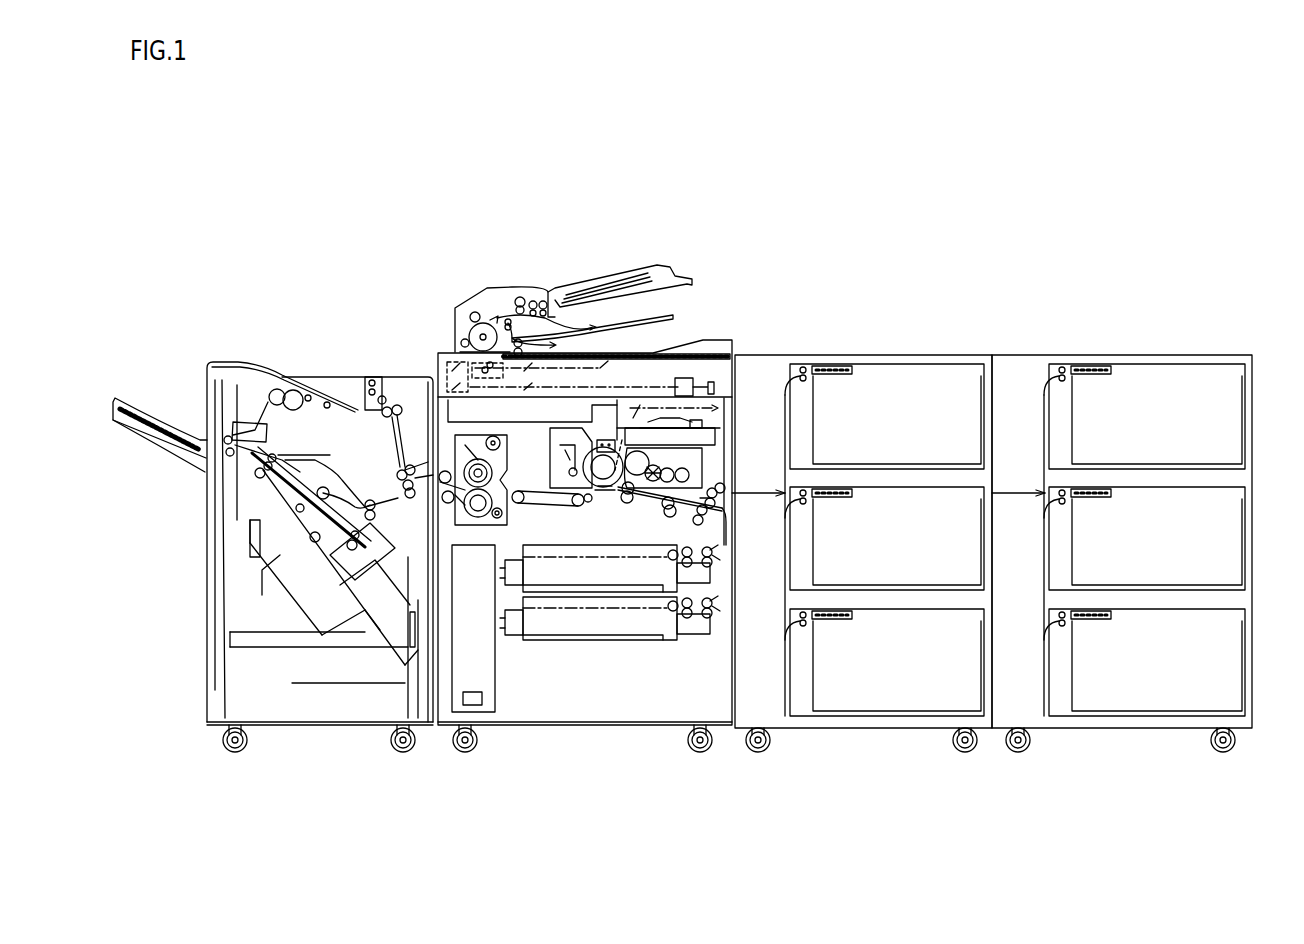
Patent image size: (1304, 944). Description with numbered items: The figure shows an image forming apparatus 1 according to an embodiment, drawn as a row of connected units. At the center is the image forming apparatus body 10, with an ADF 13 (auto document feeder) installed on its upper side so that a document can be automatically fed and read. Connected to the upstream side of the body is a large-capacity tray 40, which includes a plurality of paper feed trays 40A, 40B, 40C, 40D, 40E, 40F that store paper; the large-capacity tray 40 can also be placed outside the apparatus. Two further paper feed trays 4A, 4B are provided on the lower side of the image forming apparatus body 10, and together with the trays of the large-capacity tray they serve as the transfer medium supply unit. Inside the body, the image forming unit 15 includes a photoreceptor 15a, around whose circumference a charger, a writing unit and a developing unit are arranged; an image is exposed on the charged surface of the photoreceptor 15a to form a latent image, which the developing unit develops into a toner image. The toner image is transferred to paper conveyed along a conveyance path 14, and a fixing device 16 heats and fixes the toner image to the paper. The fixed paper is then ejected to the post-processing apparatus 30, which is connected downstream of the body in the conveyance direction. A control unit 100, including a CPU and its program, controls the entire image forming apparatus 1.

The image forming apparatus 1 is at (752, 870).
The image forming apparatus body 10 is at (622, 217).
The ADF 13 is at (387, 240).
The conveyance path 14 is at (660, 505).
The image forming unit 15 is at (540, 435).
The photoreceptor 15a is at (578, 505).
The fixing device 16 is at (492, 527).
The post-processing apparatus 30 is at (262, 302).
The large-capacity tray 40 is at (1060, 270).
The paper feed tray 40A is at (906, 338).
The paper feed tray 40B is at (906, 458).
The paper feed tray 40C is at (906, 581).
The paper feed tray 40D is at (1173, 338).
The paper feed tray 40E is at (1173, 458).
The paper feed tray 40F is at (1173, 581).
The paper feed tray 4A is at (547, 763).
The paper feed tray 4B is at (676, 657).
The control unit 100 is at (463, 708).